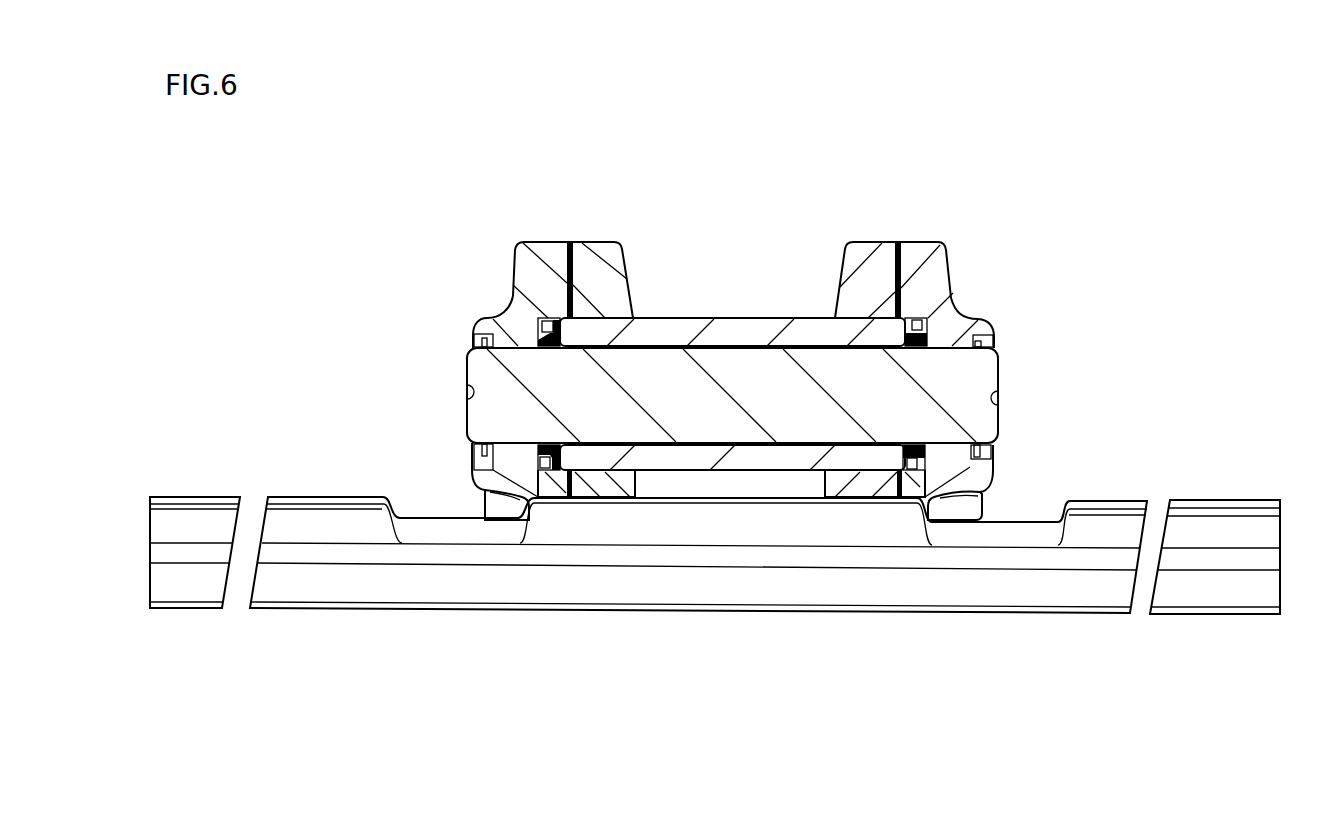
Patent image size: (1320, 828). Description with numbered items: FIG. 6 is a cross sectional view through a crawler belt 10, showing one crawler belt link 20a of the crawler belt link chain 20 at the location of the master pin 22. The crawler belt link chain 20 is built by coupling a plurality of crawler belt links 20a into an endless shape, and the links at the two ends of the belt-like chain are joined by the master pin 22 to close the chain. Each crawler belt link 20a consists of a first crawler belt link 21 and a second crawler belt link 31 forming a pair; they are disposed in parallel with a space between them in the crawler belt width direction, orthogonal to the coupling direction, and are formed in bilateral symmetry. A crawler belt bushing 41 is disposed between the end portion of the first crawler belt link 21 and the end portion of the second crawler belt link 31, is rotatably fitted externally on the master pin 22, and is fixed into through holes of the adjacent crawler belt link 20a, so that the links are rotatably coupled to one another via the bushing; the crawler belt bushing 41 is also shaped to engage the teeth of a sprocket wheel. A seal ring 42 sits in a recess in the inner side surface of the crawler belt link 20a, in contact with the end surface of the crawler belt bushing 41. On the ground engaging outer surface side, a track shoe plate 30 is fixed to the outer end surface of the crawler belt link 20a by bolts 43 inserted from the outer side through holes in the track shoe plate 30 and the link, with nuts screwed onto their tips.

The crawler belt 10 is at (1101, 133).
The crawler belt link chain 20 is at (741, 163).
The crawler belt link 20a is at (991, 163).
The first crawler belt link 21 is at (537, 248).
The master pin 22 is at (965, 383).
The track shoe plate 30 is at (716, 587).
The second crawler belt link 31 is at (862, 268).
The crawler belt bushing 41 is at (727, 332).
The seal ring 42 is at (553, 343).
The bolt 43 is at (968, 508).